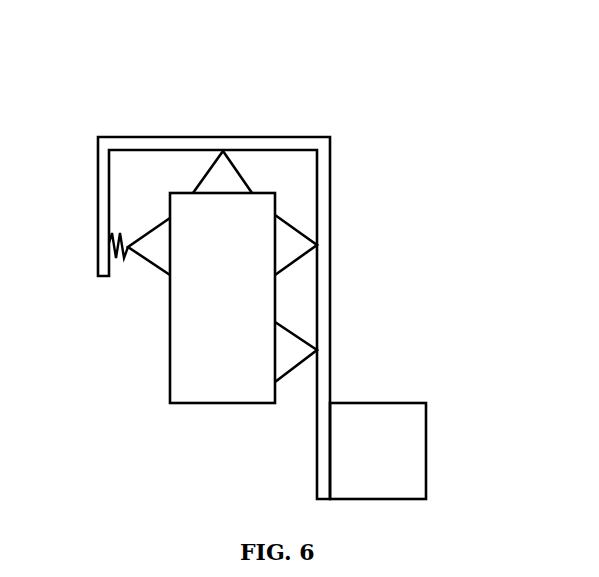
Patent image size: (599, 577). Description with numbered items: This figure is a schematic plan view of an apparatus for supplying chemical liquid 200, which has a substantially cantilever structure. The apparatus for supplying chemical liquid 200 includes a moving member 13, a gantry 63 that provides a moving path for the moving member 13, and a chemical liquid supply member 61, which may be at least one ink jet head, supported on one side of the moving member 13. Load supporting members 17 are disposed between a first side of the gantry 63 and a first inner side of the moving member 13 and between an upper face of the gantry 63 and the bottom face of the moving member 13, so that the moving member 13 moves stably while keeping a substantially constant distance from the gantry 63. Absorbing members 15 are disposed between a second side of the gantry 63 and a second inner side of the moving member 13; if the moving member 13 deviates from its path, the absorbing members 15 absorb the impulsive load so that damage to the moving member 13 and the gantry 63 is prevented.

The apparatus for supplying chemical liquid 200 is at (234, 24).
The moving member 13 is at (332, 177).
The absorbing members 15 is at (155, 233).
The load supporting members 17 is at (203, 170).
The chemical liquid supply member 61 is at (427, 448).
The gantry 63 is at (222, 392).